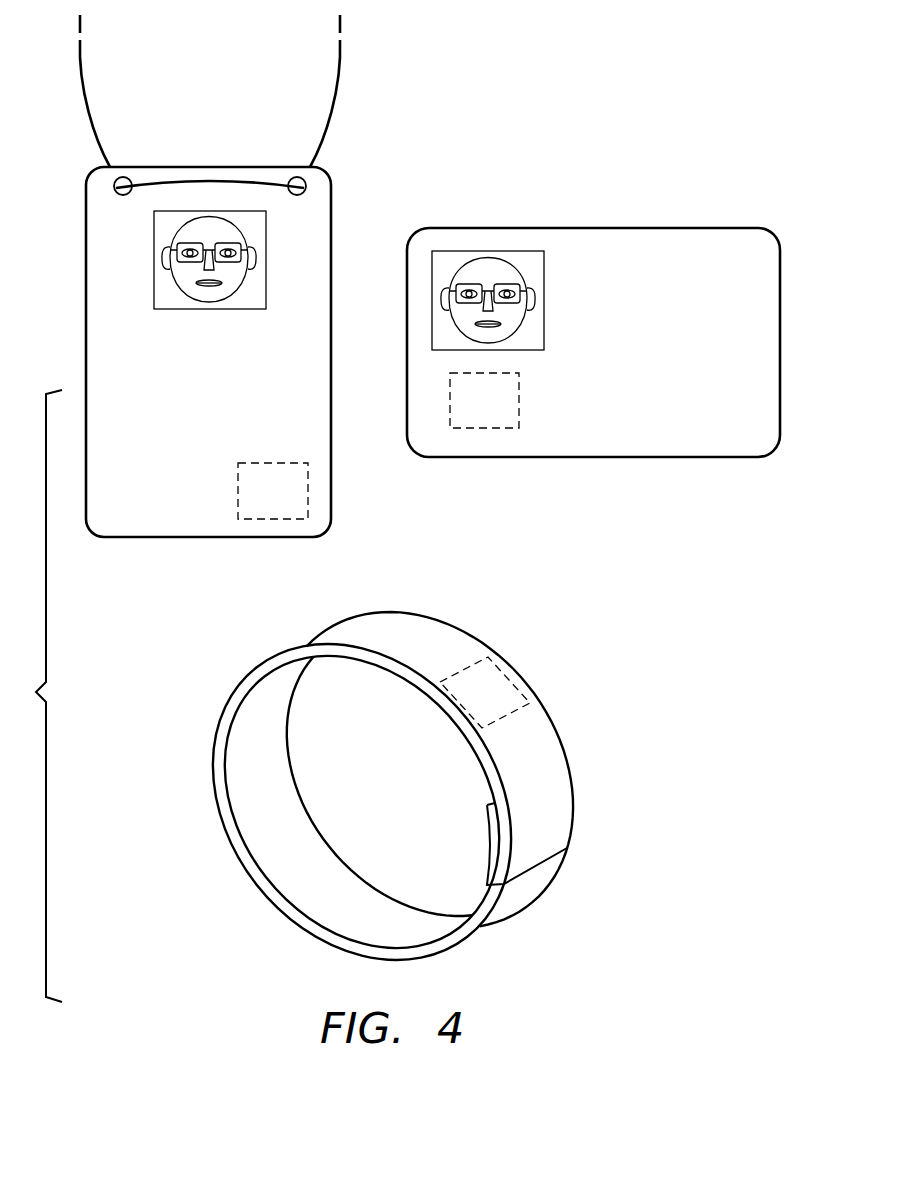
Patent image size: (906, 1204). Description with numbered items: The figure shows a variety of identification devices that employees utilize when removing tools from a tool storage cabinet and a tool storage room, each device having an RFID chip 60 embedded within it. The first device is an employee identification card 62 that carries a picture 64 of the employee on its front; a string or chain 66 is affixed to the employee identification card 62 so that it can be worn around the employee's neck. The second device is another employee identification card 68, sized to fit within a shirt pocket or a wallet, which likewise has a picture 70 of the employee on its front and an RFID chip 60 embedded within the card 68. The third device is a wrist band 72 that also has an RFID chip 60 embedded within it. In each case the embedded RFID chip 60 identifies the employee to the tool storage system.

The RFID chip 60 is at (238, 490).
The employee identification card 62 is at (138, 167).
The picture 64 is at (253, 216).
The string or chain 66 is at (338, 85).
The employee identification card 68 is at (645, 228).
The picture 70 is at (525, 265).
The wrist band 72 is at (448, 622).